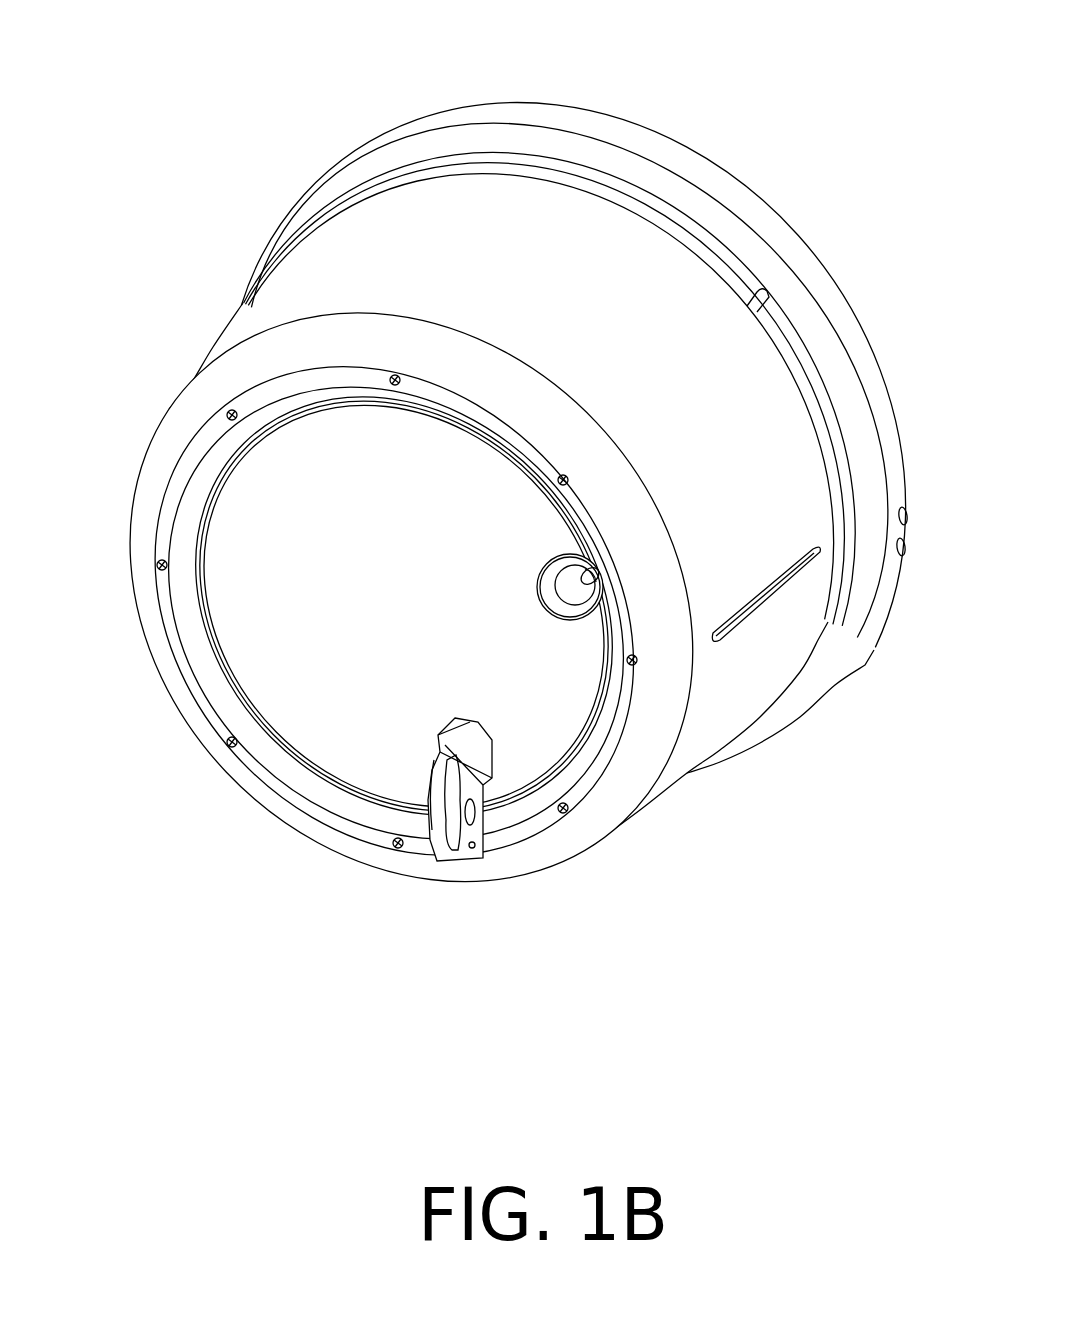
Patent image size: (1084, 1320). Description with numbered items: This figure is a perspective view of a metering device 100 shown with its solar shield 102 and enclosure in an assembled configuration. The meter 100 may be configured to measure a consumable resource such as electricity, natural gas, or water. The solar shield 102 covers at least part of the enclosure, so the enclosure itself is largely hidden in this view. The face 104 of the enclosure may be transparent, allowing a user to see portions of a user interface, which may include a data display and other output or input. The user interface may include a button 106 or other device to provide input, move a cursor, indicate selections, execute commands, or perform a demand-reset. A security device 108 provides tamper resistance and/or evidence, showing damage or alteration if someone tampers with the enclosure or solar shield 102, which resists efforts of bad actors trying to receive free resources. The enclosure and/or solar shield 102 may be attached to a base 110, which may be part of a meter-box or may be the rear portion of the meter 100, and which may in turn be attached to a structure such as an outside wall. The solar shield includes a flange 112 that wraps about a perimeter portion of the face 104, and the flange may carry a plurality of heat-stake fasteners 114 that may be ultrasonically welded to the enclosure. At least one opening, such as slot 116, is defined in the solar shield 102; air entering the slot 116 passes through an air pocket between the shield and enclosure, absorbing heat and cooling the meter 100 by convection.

The metering device 100 is at (833, 65).
The solar shield 102 is at (665, 330).
The face 104 is at (405, 610).
The button 106 is at (575, 620).
The security device 108 is at (453, 813).
The base 110 is at (587, 110).
The flange 112 is at (305, 373).
The heat-stake fasteners 114 is at (232, 747).
The slot 116 is at (765, 603).